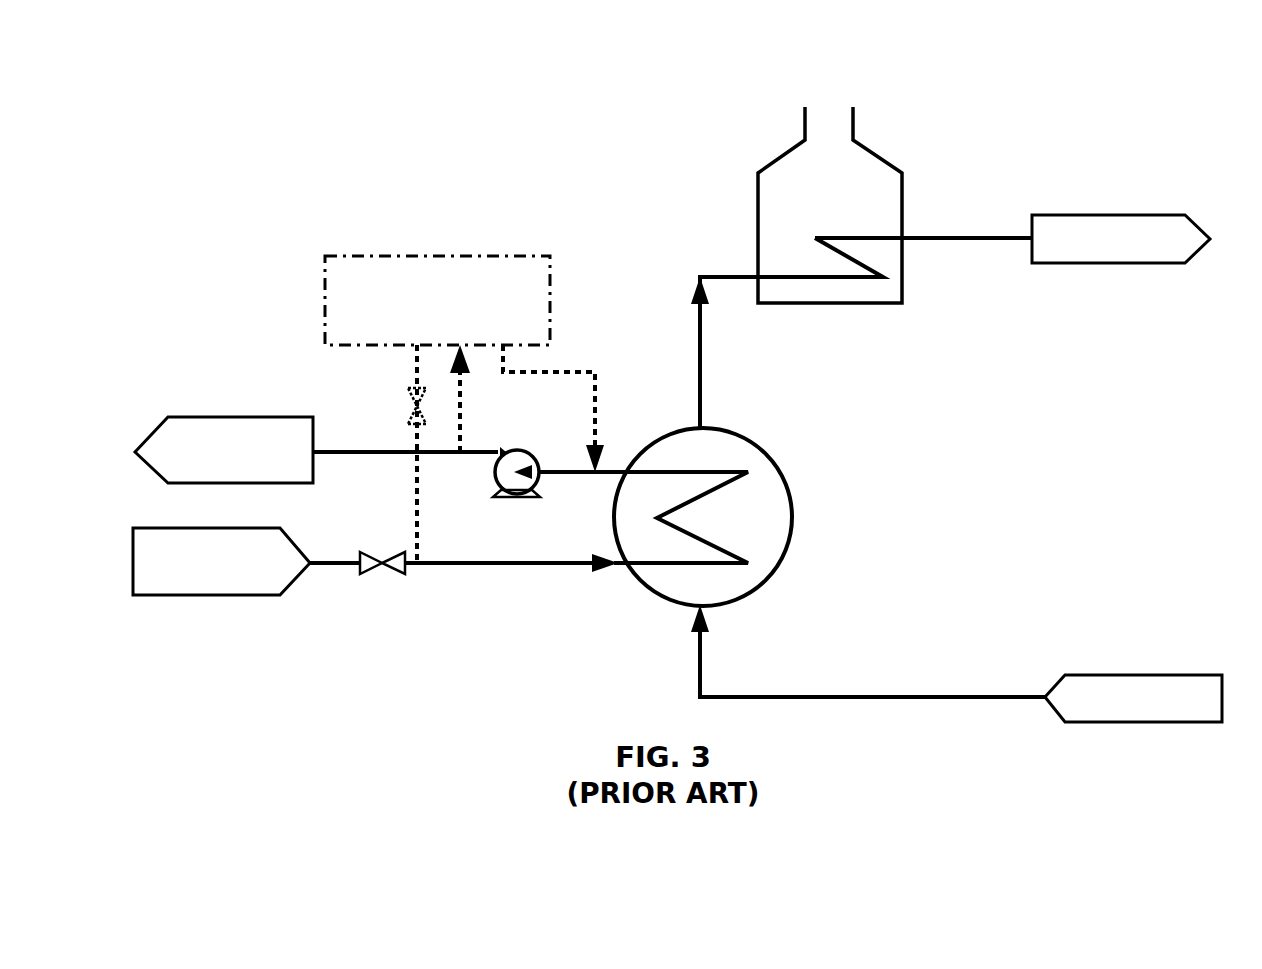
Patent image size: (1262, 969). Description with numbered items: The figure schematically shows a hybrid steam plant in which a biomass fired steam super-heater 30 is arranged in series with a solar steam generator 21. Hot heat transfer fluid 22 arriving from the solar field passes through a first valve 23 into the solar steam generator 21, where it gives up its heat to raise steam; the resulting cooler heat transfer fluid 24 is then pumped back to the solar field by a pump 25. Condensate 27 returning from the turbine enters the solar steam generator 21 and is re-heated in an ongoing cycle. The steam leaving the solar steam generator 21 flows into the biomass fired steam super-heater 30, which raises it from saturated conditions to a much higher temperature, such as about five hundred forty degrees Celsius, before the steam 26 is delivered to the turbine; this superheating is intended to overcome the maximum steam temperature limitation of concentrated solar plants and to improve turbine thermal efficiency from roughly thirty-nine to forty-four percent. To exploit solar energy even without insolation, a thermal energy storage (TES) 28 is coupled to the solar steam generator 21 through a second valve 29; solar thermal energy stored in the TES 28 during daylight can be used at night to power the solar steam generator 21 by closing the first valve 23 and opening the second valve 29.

The solar steam generator 21 is at (655, 603).
The heat transfer fluid 22 is at (238, 597).
The first valve 23 is at (386, 568).
The cooler heat transfer fluid 24 is at (190, 416).
The pump 25 is at (523, 498).
The steam 26 is at (1153, 265).
The condensate 27 is at (1157, 724).
The thermal energy storage (TES) 28 is at (422, 256).
The second valve 29 is at (410, 414).
The biomass fired steam super-heater 30 is at (863, 305).